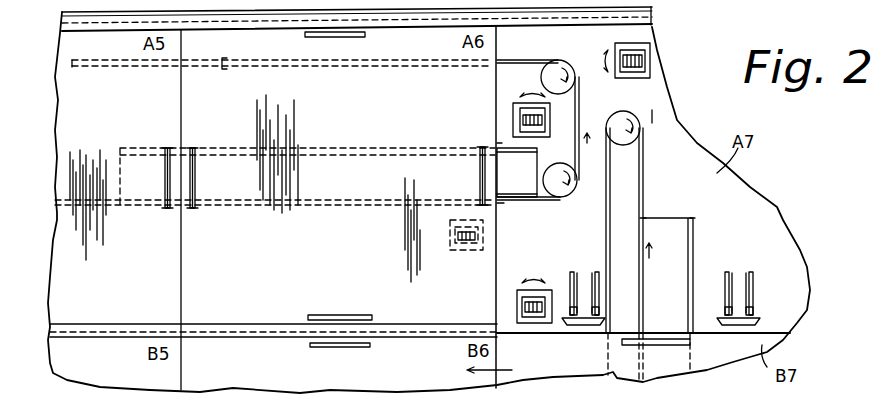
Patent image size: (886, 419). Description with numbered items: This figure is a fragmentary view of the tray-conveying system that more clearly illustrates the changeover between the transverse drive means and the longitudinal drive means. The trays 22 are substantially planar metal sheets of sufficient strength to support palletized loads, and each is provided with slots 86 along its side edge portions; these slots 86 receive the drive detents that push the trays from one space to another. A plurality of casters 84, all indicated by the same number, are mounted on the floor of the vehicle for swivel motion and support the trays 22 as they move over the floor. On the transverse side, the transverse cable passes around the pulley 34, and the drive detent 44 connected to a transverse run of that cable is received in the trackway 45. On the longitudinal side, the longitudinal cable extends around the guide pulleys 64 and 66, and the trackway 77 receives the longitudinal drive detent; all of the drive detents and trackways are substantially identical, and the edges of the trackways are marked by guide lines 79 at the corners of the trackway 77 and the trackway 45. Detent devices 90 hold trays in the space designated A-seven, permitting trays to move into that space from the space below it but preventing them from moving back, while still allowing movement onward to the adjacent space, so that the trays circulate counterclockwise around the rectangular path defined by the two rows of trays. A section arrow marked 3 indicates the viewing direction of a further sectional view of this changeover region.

The section view direction arrow 3 is at (496, 358).
The tray 22 is at (350, 128).
The pulley 34 is at (625, 115).
The drive detent 44 is at (680, 357).
The trackway 45 is at (677, 286).
The guide pulley 64 is at (565, 72).
The guide pulley 66 is at (562, 197).
The trackway 77 is at (527, 186).
The guide edge 79 is at (500, 147).
The caster 84 is at (638, 62).
The slot 86 is at (320, 37).
The detent device 90 is at (582, 283).